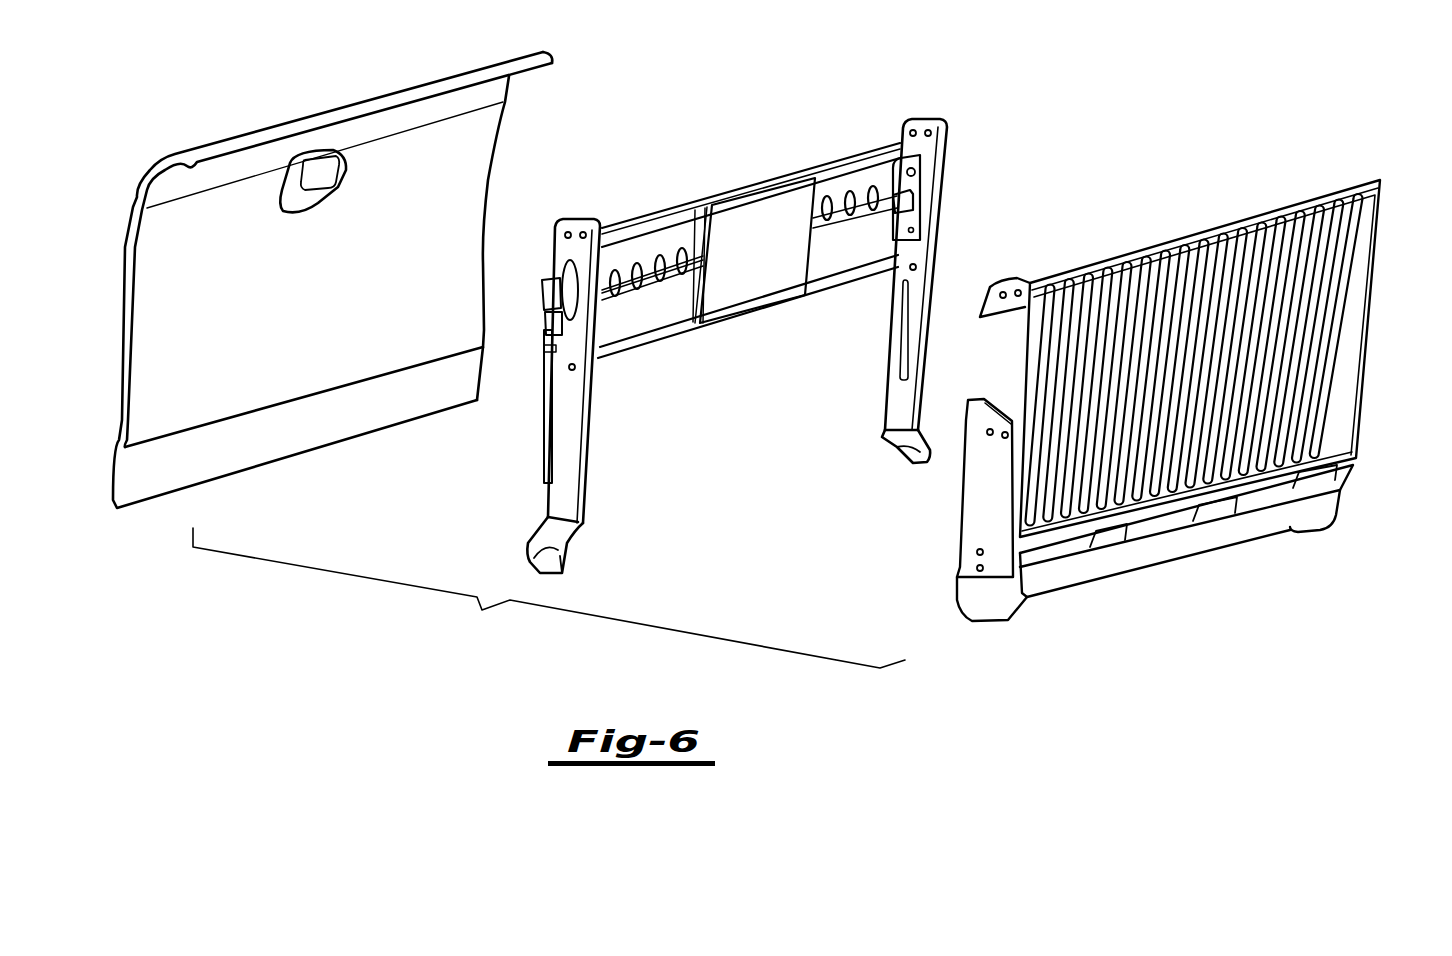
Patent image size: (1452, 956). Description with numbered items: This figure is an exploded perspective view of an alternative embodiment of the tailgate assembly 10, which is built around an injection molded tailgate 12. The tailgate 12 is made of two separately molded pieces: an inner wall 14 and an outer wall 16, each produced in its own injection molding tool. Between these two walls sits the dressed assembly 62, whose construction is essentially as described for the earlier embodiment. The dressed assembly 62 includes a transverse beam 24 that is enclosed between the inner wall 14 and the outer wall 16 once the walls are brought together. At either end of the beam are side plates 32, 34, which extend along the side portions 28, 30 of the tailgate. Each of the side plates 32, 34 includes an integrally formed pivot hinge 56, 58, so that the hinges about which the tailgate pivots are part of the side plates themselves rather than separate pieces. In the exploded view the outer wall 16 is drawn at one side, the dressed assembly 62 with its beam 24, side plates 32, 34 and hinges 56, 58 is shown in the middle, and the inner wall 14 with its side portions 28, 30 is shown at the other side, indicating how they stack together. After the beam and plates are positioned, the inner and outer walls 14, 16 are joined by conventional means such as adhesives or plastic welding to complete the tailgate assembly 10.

The tailgate assembly 10 is at (782, 346).
The tailgate 12 is at (549, 598).
The inner wall 14 is at (1353, 453).
The outer wall 16 is at (470, 186).
The transverse beam 24 is at (847, 157).
The side portion 28 is at (985, 512).
The side portion 30 is at (1375, 281).
The side plate 32 is at (585, 457).
The side plate 34 is at (888, 354).
The pivot hinge 56 is at (527, 560).
The pivot hinge 58 is at (920, 423).
The dressed assembly 62 is at (943, 177).